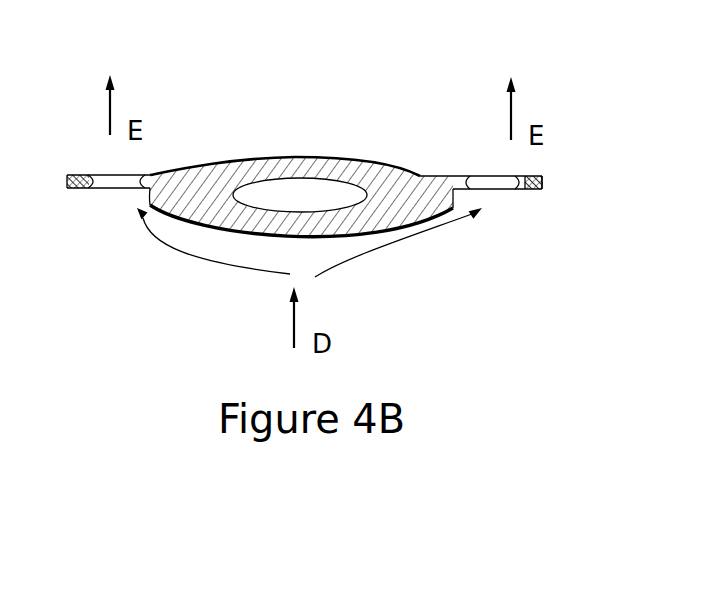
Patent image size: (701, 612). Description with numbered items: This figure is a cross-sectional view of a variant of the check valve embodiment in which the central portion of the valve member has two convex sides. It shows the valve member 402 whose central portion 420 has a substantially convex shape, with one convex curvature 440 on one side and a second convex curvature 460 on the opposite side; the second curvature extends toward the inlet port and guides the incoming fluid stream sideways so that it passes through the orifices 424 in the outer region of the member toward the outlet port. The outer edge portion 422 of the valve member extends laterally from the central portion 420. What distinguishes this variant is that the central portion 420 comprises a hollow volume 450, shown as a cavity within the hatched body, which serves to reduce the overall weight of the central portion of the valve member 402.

The valve member 402 is at (360, 189).
The central portion 420 is at (227, 175).
The flange end 422 is at (542, 188).
The flange 424 is at (500, 180).
The central aperture 440 is at (288, 158).
The hollow volume 450 is at (275, 200).
The second peripheral region 460 is at (332, 242).